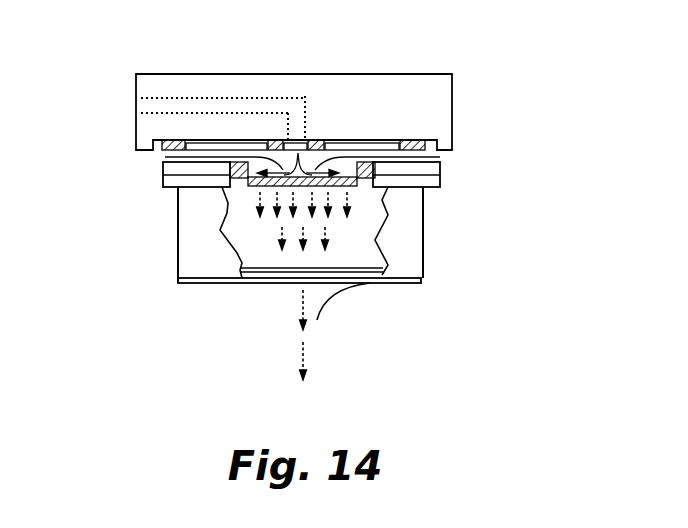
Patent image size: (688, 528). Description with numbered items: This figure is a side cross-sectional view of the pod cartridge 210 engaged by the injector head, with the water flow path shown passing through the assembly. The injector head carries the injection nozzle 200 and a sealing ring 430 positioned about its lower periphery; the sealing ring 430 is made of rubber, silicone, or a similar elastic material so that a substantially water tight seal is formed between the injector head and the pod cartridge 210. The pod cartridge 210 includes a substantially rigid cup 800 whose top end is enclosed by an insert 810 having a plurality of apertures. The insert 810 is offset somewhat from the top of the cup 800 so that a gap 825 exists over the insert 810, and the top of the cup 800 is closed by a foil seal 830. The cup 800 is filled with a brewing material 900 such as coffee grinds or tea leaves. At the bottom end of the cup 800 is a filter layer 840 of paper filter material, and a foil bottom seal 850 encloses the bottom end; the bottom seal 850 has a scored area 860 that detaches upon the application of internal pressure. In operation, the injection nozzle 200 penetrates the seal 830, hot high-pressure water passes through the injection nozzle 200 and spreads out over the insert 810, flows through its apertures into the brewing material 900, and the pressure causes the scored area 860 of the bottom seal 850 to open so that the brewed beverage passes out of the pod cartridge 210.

The injection nozzle 200 is at (317, 128).
The sealing ring 430 is at (452, 165).
The seal 830 is at (250, 156).
The gap 825 is at (345, 168).
The insert 810 is at (168, 160).
The pod cartridge 210 is at (440, 224).
The cup 800 is at (439, 270).
The bottom seal 850 is at (413, 290).
The filter layer 840 is at (247, 274).
The brewing material 900 is at (238, 232).
The scored area 860 is at (335, 298).